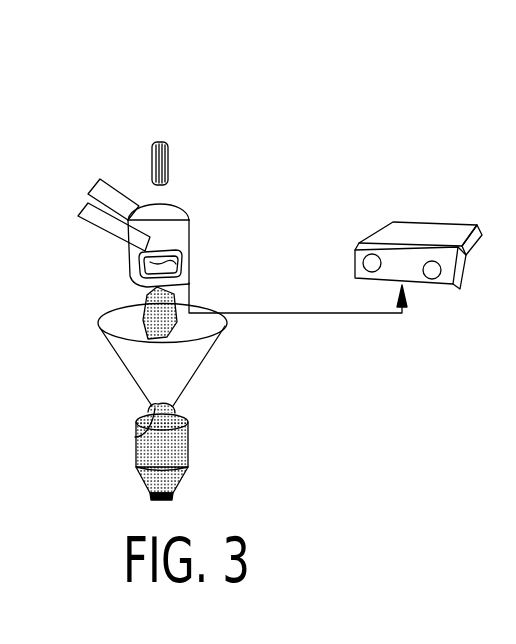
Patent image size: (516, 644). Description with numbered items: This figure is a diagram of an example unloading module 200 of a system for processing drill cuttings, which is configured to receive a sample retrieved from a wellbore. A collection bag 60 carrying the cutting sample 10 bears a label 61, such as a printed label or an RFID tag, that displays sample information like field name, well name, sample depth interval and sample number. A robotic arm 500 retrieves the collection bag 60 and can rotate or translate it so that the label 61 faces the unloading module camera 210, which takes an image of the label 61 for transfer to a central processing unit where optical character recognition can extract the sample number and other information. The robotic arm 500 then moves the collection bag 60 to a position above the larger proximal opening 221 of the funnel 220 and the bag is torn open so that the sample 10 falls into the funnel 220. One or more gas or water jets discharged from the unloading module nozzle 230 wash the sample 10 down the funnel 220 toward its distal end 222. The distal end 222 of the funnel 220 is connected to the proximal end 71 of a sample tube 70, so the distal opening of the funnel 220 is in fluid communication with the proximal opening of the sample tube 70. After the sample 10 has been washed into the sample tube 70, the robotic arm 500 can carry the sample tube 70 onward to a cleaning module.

The unloading module 200 is at (345, 92).
The unloading module camera 210 is at (427, 230).
The unloading module nozzle 230 is at (169, 158).
The robotic arm 500 is at (87, 207).
The collection bag 60 is at (177, 235).
The label 61 is at (177, 258).
The sample 10 is at (125, 306).
The funnel 220 is at (152, 377).
The proximal opening 221 is at (118, 320).
The distal end 222 is at (135, 437).
The sample tube 70 is at (178, 442).
The proximal end 71 is at (177, 408).